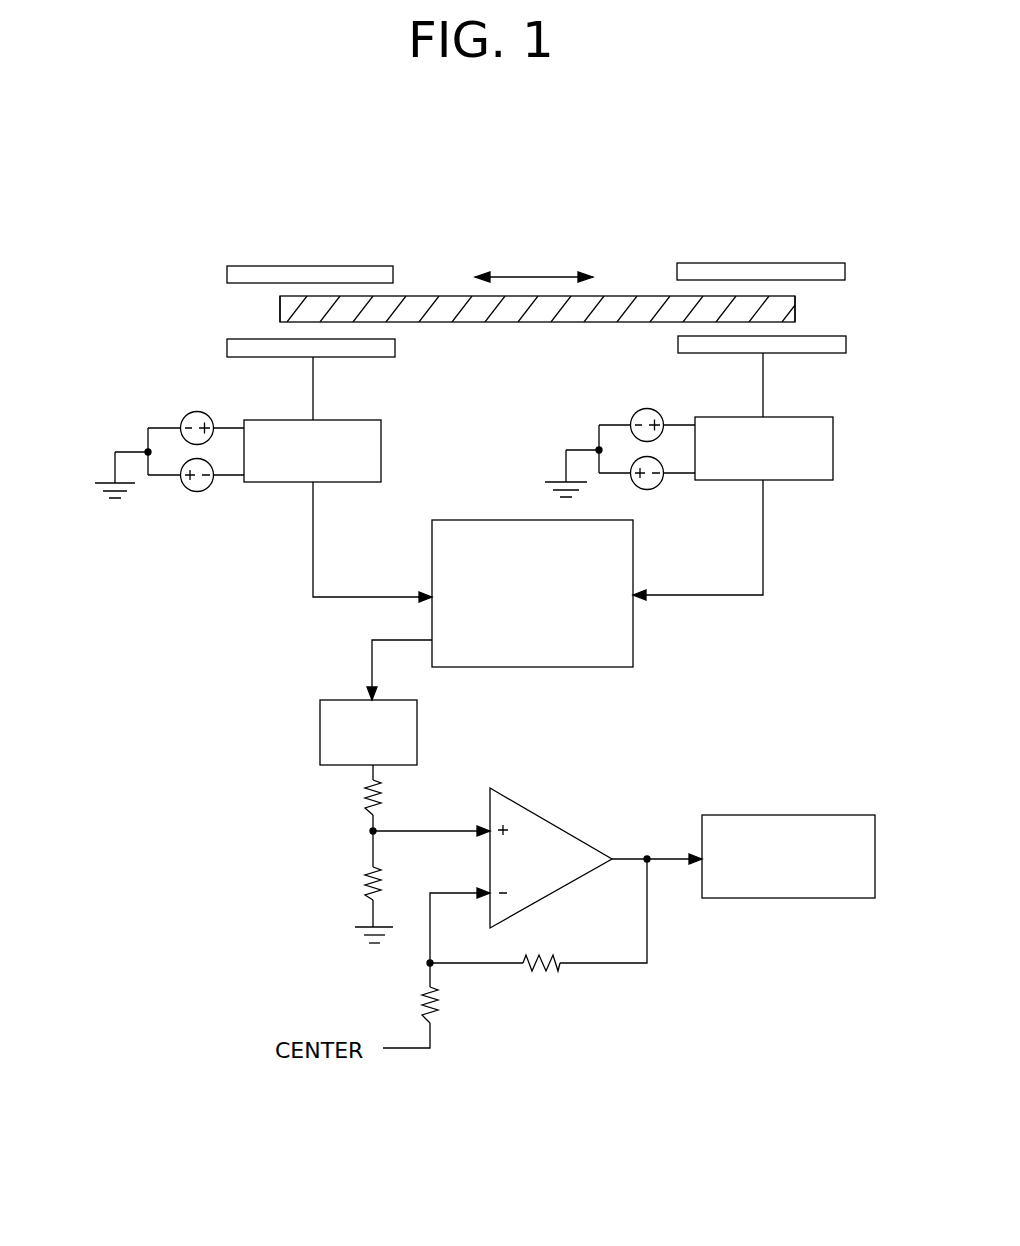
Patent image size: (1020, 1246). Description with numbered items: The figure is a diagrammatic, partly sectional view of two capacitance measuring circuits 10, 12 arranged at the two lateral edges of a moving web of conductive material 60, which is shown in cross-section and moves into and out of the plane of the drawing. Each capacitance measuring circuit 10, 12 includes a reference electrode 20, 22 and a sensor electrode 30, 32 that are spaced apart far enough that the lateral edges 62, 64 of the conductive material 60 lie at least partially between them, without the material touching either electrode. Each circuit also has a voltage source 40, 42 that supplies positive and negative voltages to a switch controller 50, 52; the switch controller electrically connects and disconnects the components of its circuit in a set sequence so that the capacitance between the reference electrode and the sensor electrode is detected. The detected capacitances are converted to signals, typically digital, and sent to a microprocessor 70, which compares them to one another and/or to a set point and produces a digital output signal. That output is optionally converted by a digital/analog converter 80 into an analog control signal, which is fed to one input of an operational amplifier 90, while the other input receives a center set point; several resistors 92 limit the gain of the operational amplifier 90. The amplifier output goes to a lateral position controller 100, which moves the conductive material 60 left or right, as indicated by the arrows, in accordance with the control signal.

The capacitance measuring circuit 10 is at (205, 382).
The capacitance measuring circuit 12 is at (810, 385).
The reference electrode 20 is at (290, 266).
The reference electrode 22 is at (770, 263).
The sensor electrode 30 is at (350, 357).
The sensor electrode 32 is at (715, 353).
The voltage source 40 is at (148, 428).
The voltage source 42 is at (599, 428).
The switch controller 50 is at (276, 482).
The switch controller 52 is at (833, 445).
The conductive material 60 is at (437, 296).
The lateral edge 62 is at (280, 308).
The lateral edge 64 is at (795, 305).
The microprocessor 70 is at (580, 667).
The digital/analog converter 80 is at (320, 730).
The operational amplifier 90 is at (555, 821).
The resistor 92 is at (370, 797).
The lateral position controller 100 is at (770, 815).